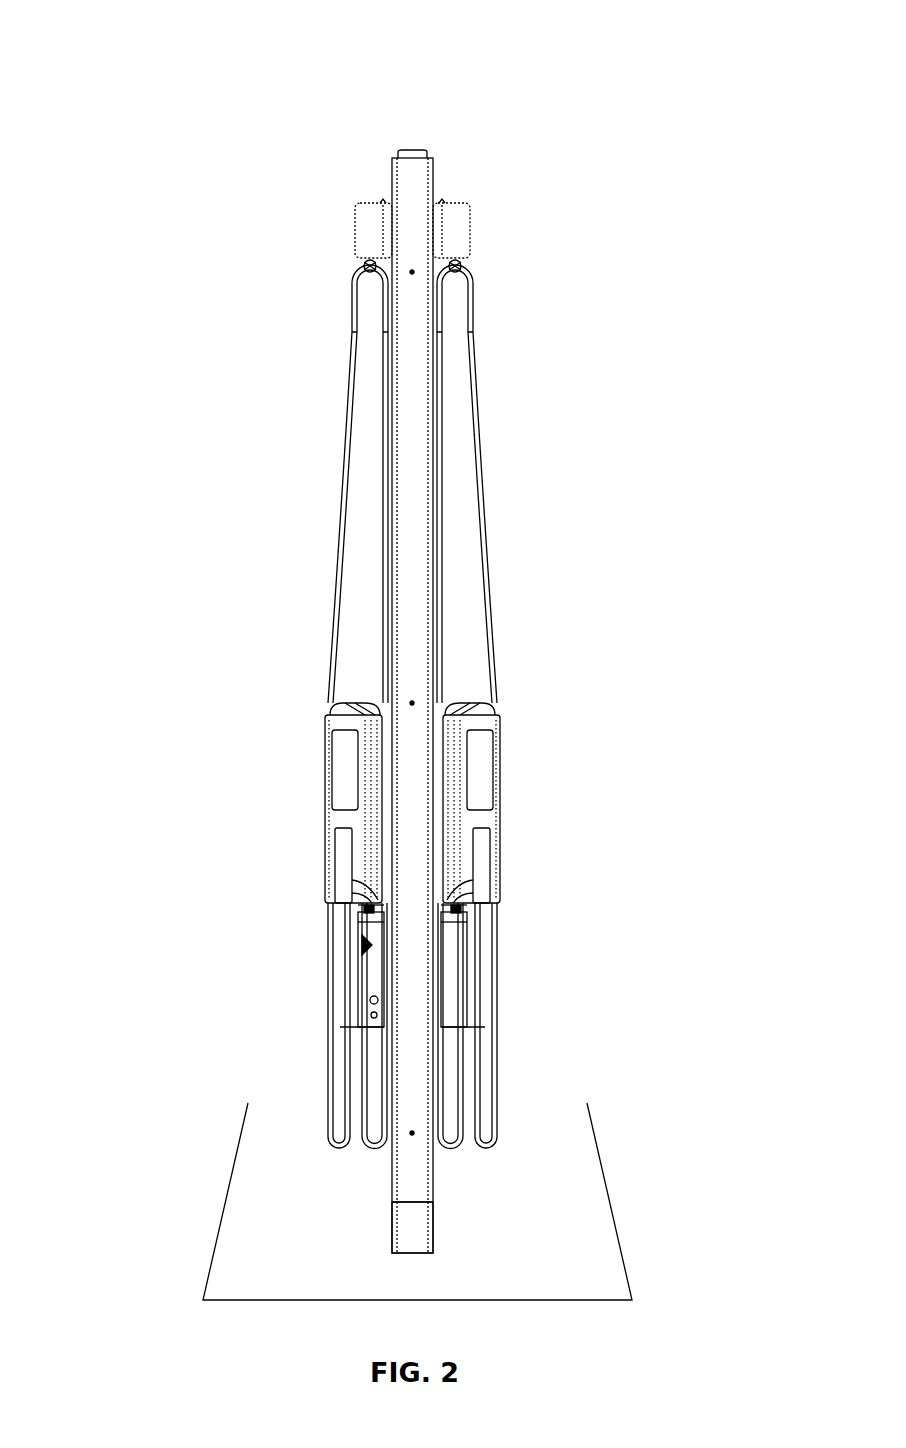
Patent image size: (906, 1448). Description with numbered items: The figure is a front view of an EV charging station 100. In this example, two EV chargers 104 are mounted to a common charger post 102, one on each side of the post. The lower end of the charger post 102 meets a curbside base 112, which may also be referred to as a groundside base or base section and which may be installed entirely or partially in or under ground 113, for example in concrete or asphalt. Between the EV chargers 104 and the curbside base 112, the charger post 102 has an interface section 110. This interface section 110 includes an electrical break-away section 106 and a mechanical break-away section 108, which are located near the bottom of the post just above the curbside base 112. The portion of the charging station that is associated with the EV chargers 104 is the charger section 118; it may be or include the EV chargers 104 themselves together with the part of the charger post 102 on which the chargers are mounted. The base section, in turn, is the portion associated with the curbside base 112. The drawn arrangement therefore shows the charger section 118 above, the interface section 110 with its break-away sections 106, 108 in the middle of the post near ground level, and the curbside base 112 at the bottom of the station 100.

The EV charging station 100 is at (257, 149).
The charger post 102 is at (397, 452).
The EV charger 104 is at (326, 766).
The electrical break-away section 106 is at (317, 1185).
The mechanical break-away section 108 is at (317, 1229).
The interface section 110 is at (480, 1202).
The curbside base 112 is at (433, 1253).
The ground 113 is at (613, 1282).
The charger section 118 is at (277, 877).